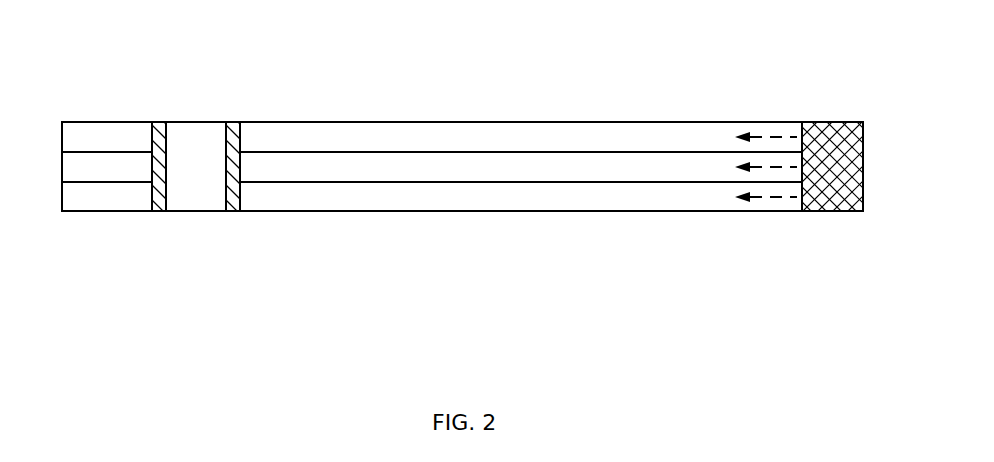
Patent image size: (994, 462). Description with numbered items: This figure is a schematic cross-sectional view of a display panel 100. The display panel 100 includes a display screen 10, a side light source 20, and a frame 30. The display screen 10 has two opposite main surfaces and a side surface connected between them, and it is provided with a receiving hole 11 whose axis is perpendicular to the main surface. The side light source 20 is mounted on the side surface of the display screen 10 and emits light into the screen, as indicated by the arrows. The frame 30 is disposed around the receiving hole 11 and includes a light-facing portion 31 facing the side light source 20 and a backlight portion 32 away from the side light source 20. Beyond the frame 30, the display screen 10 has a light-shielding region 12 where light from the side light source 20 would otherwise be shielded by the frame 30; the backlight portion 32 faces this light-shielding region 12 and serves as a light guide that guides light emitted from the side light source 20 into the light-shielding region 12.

The display panel 100 is at (477, 22).
The display screen 10 is at (432, 175).
The receiving hole 11 is at (196, 112).
The light-shielding region 12 is at (123, 112).
The side light source 20 is at (833, 211).
The frame 30 is at (198, 219).
The light-facing portion 31 is at (236, 211).
The backlight portion 32 is at (160, 211).